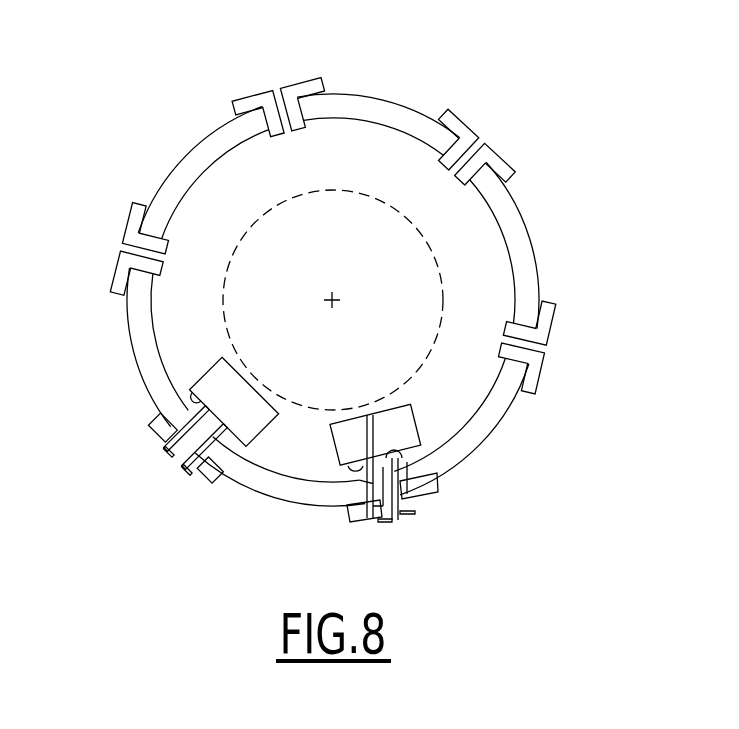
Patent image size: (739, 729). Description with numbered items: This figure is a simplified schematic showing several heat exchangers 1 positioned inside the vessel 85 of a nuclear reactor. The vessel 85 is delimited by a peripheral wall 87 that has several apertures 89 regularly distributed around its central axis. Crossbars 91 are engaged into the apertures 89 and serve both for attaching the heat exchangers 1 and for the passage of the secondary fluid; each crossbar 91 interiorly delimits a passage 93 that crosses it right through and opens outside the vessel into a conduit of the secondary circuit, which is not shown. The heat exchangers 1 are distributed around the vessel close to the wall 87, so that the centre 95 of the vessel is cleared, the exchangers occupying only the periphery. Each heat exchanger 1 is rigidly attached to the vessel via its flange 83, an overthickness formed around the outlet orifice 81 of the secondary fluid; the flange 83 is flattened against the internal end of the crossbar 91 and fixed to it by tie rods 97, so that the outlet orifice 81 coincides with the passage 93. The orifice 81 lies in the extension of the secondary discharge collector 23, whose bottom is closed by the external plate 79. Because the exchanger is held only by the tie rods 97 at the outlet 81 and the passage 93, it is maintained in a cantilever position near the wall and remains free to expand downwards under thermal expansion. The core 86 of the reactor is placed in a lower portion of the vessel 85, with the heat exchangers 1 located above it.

The heat exchanger 1 is at (312, 421).
The secondary discharge collector 23 is at (250, 400).
The external plate 79 is at (240, 383).
The outlet orifice 81 is at (217, 392).
The flange 83 is at (362, 478).
The vessel 85 is at (376, 84).
The core 86 is at (444, 291).
The peripheral wall 87 is at (534, 252).
The apertures 89 is at (290, 100).
The crossbars 91 is at (248, 96).
The passage 93 is at (288, 131).
The centre 95 is at (338, 274).
The tie rods 97 is at (166, 454).